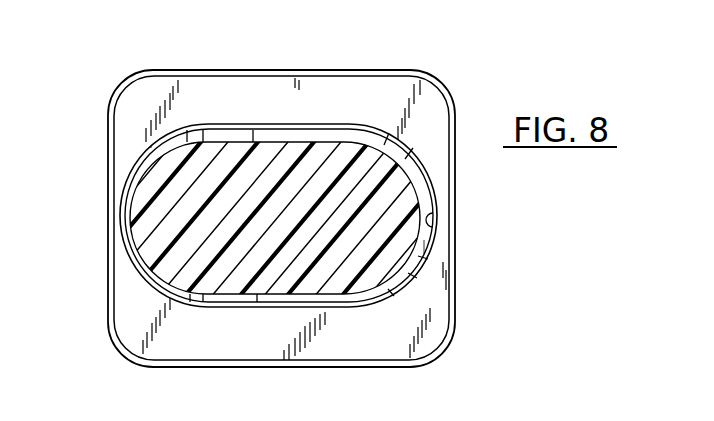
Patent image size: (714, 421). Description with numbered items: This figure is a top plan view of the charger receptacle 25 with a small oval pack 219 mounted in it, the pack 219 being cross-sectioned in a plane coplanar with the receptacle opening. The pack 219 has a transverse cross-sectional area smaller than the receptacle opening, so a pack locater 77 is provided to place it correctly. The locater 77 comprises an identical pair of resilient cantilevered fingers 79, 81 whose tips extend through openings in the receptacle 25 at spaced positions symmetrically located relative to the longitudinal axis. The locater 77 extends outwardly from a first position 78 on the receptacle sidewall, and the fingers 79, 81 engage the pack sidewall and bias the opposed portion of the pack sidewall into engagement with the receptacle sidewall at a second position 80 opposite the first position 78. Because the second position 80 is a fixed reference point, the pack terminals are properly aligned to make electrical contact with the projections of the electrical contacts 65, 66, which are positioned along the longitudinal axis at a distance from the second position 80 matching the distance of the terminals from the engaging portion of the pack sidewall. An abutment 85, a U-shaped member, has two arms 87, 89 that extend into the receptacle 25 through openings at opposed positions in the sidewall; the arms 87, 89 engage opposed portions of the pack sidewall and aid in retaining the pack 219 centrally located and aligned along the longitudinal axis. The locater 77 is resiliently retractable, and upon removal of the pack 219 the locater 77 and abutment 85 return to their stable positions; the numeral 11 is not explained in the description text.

The sealed assembly 11 is at (96, 95).
The receptacle 25 is at (343, 92).
The second position 80 is at (122, 247).
The abutment 85 is at (140, 148).
The arm 89 is at (197, 134).
The electrical contact 66 is at (270, 134).
The arm 87 is at (199, 305).
The electrical contact 65 is at (269, 305).
The resilient cantilevered finger 81 is at (410, 155).
The resilient cantilevered finger 79 is at (405, 275).
The pack 219 is at (408, 199).
The first position 78 is at (434, 220).
The pack locater 77 is at (430, 247).